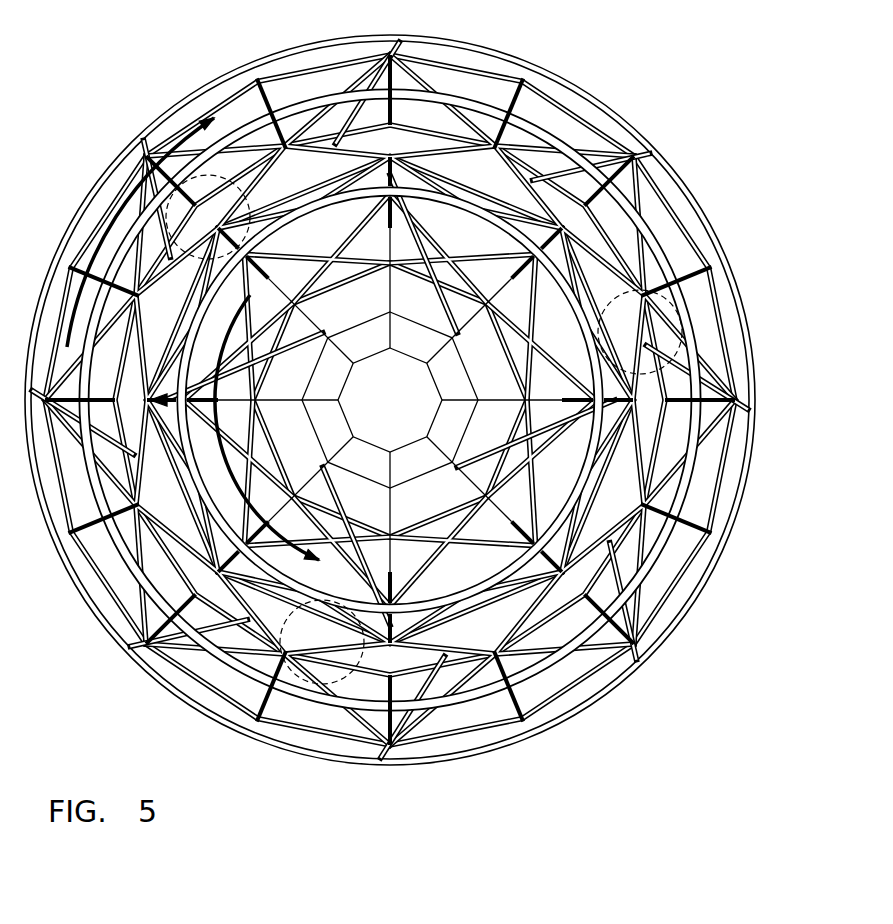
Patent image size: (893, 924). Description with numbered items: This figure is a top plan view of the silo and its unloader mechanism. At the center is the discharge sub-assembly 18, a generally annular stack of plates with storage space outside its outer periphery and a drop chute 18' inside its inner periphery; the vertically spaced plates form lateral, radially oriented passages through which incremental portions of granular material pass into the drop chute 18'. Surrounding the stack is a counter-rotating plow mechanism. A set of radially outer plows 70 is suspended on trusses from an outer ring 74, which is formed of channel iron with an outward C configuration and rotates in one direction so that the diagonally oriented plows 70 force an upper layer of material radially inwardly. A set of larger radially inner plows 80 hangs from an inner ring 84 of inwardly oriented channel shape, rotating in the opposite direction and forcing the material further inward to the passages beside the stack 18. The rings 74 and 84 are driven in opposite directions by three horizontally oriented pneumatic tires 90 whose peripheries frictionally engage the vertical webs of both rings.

The discharge sub-assembly 18 is at (390, 400).
The drop chute 18' is at (390, 400).
The radially outer plows 70 is at (362, 122).
The outer ring 74 is at (540, 667).
The radially inner plows 80 is at (311, 336).
The inner ring 84 is at (441, 605).
The pneumatic tires 90 is at (238, 212).